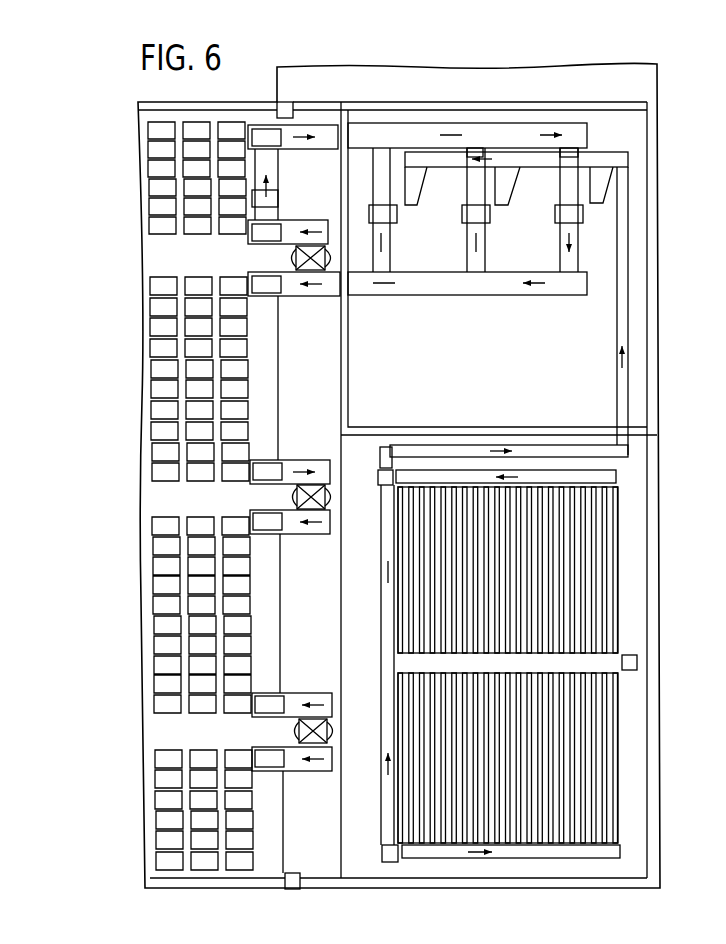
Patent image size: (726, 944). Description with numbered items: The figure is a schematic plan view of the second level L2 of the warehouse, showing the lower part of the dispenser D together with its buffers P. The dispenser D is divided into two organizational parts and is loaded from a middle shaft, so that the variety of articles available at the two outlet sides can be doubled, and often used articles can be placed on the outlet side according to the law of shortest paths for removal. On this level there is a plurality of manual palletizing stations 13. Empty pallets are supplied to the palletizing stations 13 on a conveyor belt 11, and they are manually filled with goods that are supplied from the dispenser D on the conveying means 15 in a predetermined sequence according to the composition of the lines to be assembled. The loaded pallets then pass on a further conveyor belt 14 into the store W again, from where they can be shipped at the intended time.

The conveyor belt 11 is at (387, 138).
The manual palletizing stations 13 is at (440, 245).
The further conveyor belt 14 is at (443, 297).
The conveying means 15 is at (598, 157).
The store W is at (262, 412).
The buffer P is at (615, 558).
The dispenser D is at (615, 750).
The second level L2 is at (708, 374).